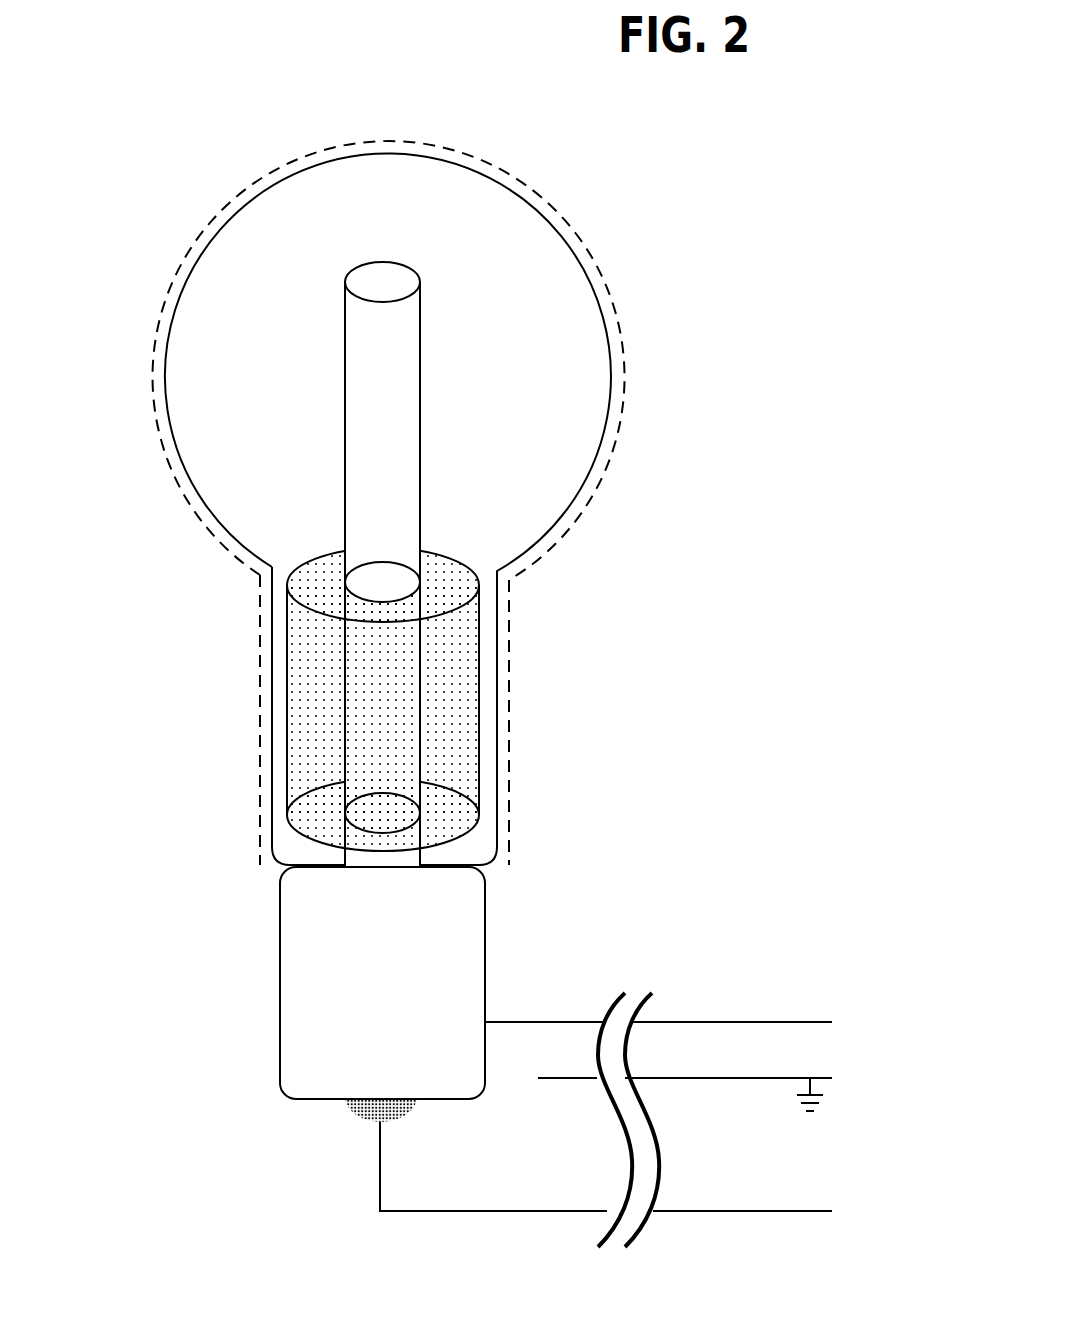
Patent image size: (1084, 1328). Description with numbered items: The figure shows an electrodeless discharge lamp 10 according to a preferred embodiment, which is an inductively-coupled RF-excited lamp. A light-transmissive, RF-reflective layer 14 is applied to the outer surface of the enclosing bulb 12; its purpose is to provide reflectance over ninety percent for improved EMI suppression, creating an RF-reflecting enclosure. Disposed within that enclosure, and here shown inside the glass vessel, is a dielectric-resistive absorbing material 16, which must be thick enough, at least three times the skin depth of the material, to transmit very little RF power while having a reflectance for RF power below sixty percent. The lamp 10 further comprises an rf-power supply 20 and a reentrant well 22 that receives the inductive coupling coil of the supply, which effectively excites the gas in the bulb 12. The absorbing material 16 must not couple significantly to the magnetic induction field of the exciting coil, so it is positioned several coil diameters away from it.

The electrodeless discharge lamp 10 is at (116, 176).
The enclosing bulb 12 is at (263, 192).
The light-transmissive, RF-reflective layer 14 is at (508, 178).
The dielectric-resistive absorbing material 16 is at (302, 716).
The rf-power supply 20 is at (280, 1013).
The reentrant well 22 is at (422, 368).